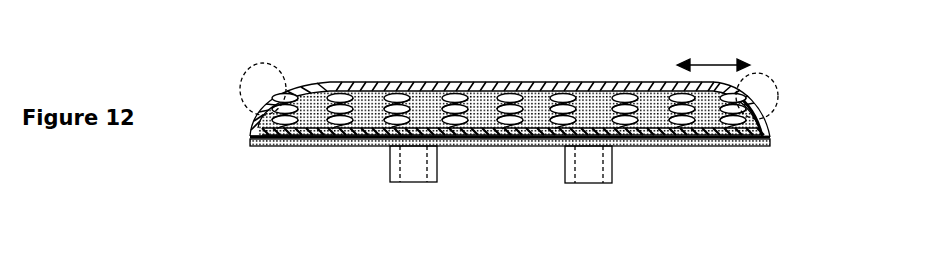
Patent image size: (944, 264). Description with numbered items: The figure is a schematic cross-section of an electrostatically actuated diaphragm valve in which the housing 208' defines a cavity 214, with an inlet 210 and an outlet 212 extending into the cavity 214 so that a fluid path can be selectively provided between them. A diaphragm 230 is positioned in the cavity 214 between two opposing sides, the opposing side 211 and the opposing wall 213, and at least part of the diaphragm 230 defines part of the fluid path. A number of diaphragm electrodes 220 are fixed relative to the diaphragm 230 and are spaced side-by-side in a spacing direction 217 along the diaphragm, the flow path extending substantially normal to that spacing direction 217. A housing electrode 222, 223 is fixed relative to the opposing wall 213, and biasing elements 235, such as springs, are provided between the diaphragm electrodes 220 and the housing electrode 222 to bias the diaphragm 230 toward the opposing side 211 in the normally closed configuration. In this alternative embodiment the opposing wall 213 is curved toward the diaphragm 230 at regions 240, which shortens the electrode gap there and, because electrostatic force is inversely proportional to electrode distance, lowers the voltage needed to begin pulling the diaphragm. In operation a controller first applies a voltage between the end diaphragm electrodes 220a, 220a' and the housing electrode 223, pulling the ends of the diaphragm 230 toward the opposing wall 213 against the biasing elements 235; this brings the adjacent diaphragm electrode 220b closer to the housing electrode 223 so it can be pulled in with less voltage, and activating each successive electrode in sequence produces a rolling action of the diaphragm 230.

The regions 240 is at (250, 72).
The housing 208' is at (793, 114).
The diaphragm electrode 220a is at (235, 171).
The diaphragm electrode 220a' is at (792, 163).
The diaphragm electrodes 220 is at (348, 147).
The diaphragm electrode 220b is at (498, 145).
The inlet 210 is at (417, 175).
The outlet 212 is at (585, 163).
The opposing side 211 is at (488, 143).
The diaphragm 230 is at (695, 140).
The biasing element 235 is at (437, 95).
The housing electrode 223 is at (497, 82).
The opposing wall 213 is at (605, 82).
The housing electrode 222 is at (630, 82).
The spacing direction 217 is at (713, 52).
The cavity 214 is at (510, 113).